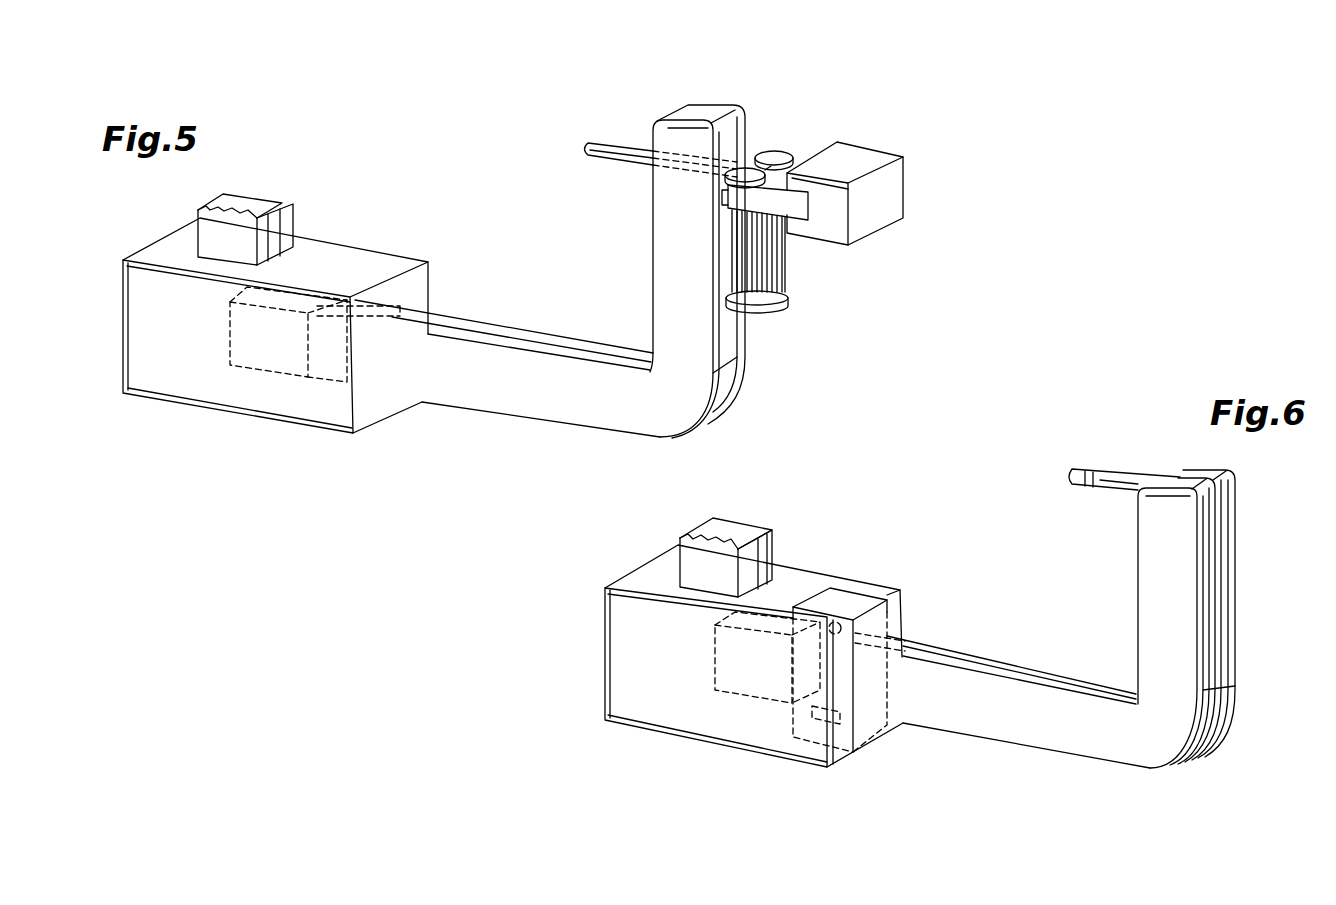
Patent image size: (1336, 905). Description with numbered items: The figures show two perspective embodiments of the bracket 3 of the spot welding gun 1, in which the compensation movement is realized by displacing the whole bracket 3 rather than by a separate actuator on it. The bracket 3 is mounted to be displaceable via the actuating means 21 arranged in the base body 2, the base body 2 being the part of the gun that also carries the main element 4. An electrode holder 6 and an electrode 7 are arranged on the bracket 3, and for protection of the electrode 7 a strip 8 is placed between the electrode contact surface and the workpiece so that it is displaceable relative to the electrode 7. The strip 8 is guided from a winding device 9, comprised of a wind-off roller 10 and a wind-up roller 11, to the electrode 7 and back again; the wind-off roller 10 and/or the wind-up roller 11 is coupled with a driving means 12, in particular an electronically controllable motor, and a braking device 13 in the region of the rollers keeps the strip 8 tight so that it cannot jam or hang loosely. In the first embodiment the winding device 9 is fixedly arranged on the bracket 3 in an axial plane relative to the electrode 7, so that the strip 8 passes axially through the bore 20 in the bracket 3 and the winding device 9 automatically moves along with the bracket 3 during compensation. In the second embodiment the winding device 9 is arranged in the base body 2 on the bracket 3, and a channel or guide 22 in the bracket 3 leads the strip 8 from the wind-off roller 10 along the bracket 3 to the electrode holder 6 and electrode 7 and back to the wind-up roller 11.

In FIG. 5, the spot welding gun 1 is at (358, 487).
In FIG. 6, the spot welding gun 1 is at (558, 678).
In FIG. 5, the base body 2 is at (168, 372).
In FIG. 6, the base body 2 is at (650, 698).
In FIG. 5, the bracket 3 is at (487, 385).
In FIG. 6, the bracket 3 is at (705, 562).
In FIG. 5, the main element 4 is at (243, 228).
In FIG. 5, the electrode holder 6 is at (640, 163).
In FIG. 6, the electrode holder 6 is at (1133, 487).
In FIG. 5, the electrode 7 is at (563, 133).
In FIG. 6, the electrode 7 is at (1052, 468).
In FIG. 5, the strip 8 is at (622, 145).
In FIG. 6, the strip 8 is at (1092, 468).
In FIG. 5, the winding device 9 is at (843, 120).
In FIG. 6, the winding device 9 is at (893, 614).
In FIG. 5, the wind-off roller 10 is at (775, 153).
In FIG. 6, the wind-off roller 10 is at (837, 623).
In FIG. 5, the wind-up roller 11 is at (743, 173).
In FIG. 6, the wind-up roller 11 is at (822, 720).
In FIG. 5, the driving means 12 is at (772, 308).
In FIG. 5, the braking device 13 is at (870, 210).
In FIG. 5, the bore 20 is at (687, 157).
In FIG. 5, the actuating means 21 is at (262, 335).
In FIG. 6, the actuating means 21 is at (747, 670).
In FIG. 6, the guide 22 is at (967, 667).